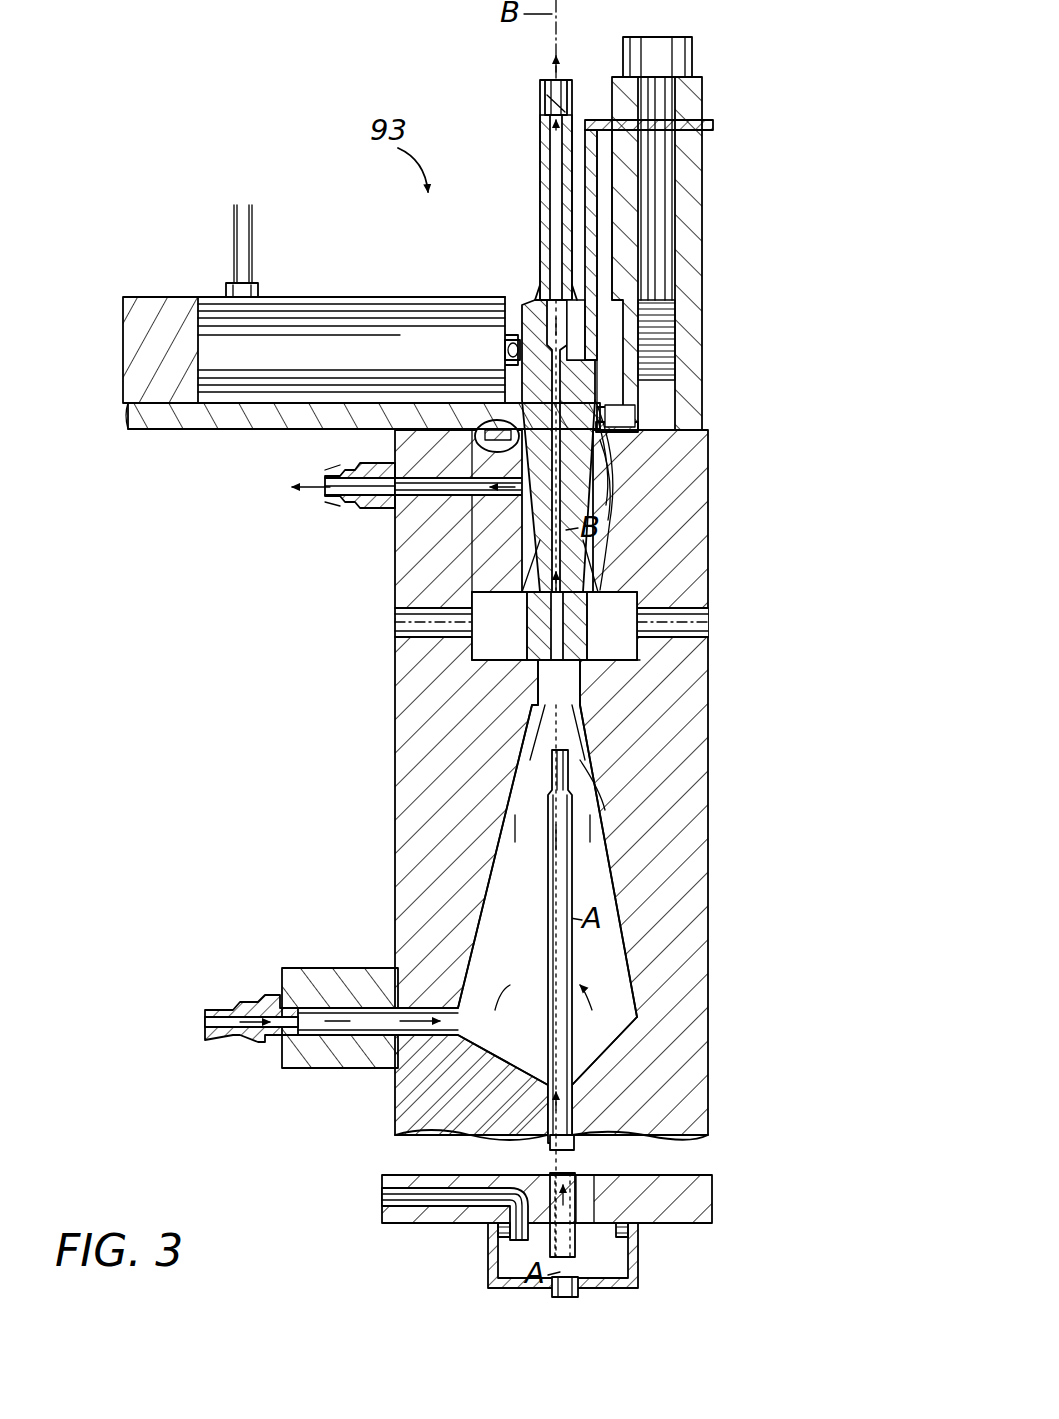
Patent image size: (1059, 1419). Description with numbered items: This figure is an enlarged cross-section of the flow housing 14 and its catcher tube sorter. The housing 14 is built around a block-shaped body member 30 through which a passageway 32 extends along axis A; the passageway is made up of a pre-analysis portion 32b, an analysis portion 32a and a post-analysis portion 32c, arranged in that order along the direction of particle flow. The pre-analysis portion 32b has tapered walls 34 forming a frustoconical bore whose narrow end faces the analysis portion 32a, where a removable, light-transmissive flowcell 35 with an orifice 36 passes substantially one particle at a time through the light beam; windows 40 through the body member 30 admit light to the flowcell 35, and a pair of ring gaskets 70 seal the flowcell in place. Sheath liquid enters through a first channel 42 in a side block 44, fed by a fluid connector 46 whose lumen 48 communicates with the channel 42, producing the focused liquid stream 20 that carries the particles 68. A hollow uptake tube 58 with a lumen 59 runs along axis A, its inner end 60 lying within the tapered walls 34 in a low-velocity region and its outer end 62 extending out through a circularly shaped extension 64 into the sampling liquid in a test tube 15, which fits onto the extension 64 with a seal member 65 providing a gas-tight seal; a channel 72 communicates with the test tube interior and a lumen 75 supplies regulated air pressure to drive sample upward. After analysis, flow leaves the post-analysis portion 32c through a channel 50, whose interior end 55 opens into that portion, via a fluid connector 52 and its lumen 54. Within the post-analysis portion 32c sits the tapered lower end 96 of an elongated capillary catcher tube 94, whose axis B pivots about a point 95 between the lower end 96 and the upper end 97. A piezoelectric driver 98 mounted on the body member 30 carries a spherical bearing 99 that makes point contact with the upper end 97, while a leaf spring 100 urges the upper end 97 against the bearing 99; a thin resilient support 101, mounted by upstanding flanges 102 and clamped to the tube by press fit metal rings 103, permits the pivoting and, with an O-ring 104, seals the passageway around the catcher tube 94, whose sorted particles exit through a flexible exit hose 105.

The housing 14 is at (700, 726).
The test tube 15 is at (645, 1228).
The liquid stream 20 is at (530, 762).
The body member 30 is at (393, 708).
The passageway 32 is at (590, 745).
The analysis portion 32a is at (648, 665).
The pre-analysis portion 32b is at (600, 795).
The post-analysis portion 32c is at (646, 497).
The tapered walls 34 is at (537, 740).
The flowcell 35 is at (528, 636).
The orifice 36 is at (528, 608).
The windows 40 is at (395, 612).
The first channel 42 is at (345, 1000).
The side block 44 is at (322, 1062).
The fluid connector 46 is at (233, 1043).
The lumen 48 is at (207, 1016).
The channel 50 is at (393, 510).
The fluid connector 52 is at (330, 498).
The lumen 54 is at (332, 480).
The interior end 55 is at (526, 500).
The uptake tube 58 is at (555, 1245).
The lumen 59 is at (625, 1242).
The inner end 60 is at (572, 775).
The outer end 62 is at (590, 1290).
The circularly shaped extension 64 is at (590, 1215).
The seal member 65 is at (500, 1237).
The particles 68 is at (546, 182).
The ring gaskets 70 is at (660, 682).
The channel 72 is at (430, 1222).
The lumen 75 is at (386, 1198).
The catcher tube 94 is at (638, 495).
The point 95 is at (557, 432).
The lower end 96 is at (566, 555).
The upper end 97 is at (527, 312).
The driver 98 is at (322, 330).
The bearing 99 is at (506, 355).
The leaf spring 100 is at (603, 120).
The resilient support 101 is at (639, 416).
The upstanding flanges 102 is at (640, 394).
The press fit metal rings 103 is at (497, 438).
The O-ring 104 is at (646, 462).
The flexible exit hose 105 is at (541, 100).